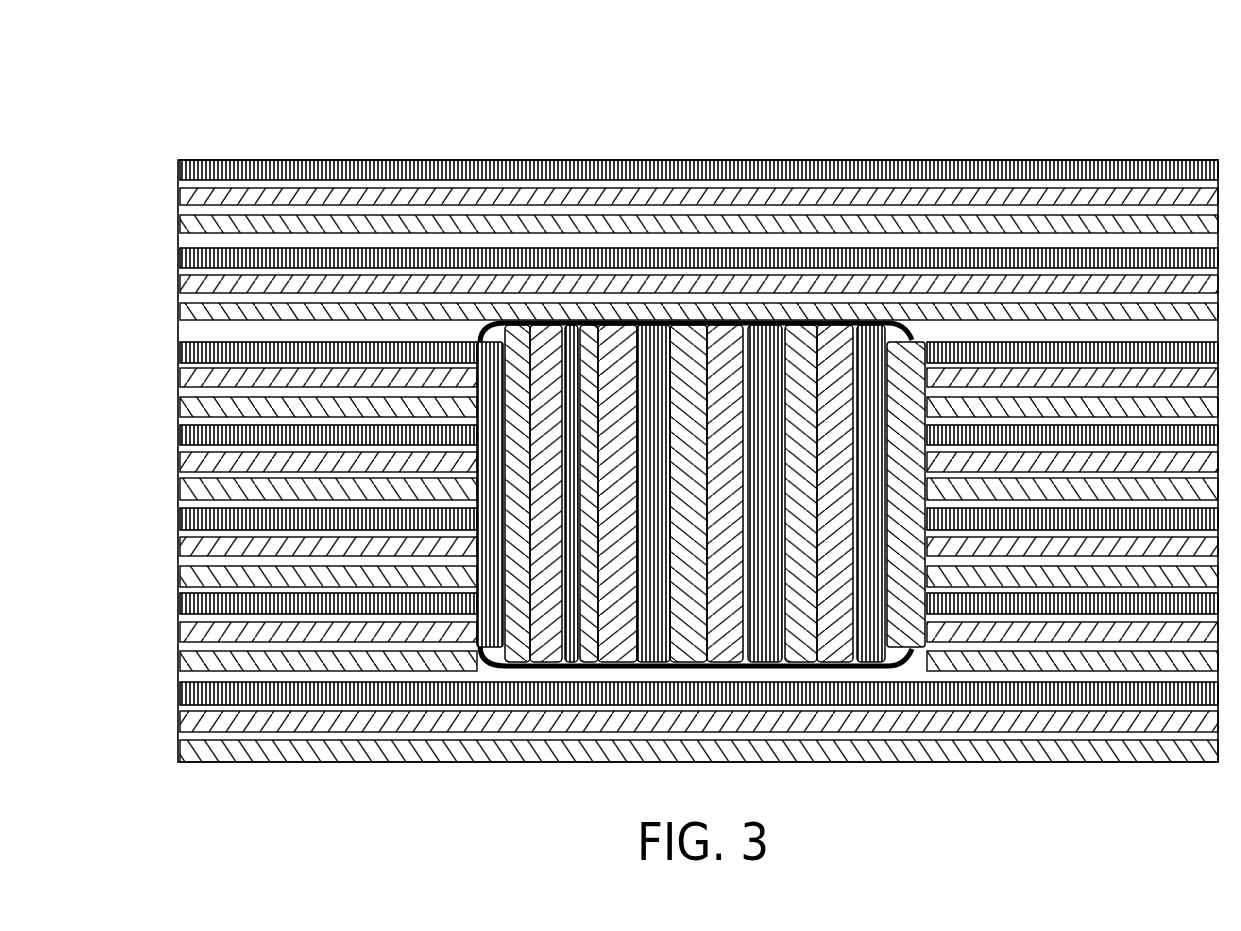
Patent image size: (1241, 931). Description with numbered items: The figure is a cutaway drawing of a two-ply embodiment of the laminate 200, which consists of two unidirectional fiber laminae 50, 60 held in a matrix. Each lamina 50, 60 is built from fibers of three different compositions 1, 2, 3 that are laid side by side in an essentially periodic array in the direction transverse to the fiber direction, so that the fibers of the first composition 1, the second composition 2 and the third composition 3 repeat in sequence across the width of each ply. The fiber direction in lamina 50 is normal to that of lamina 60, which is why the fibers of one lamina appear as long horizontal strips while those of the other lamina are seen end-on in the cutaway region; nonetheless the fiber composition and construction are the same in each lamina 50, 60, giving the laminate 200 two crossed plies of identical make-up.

The laminate 200 is at (216, 55).
The fiber of first composition 1 is at (182, 350).
The fiber of second composition 2 is at (178, 545).
The fiber of third composition 3 is at (178, 750).
The unidirectional fiber lamina 50 is at (785, 240).
The unidirectional fiber lamina 60 is at (747, 638).